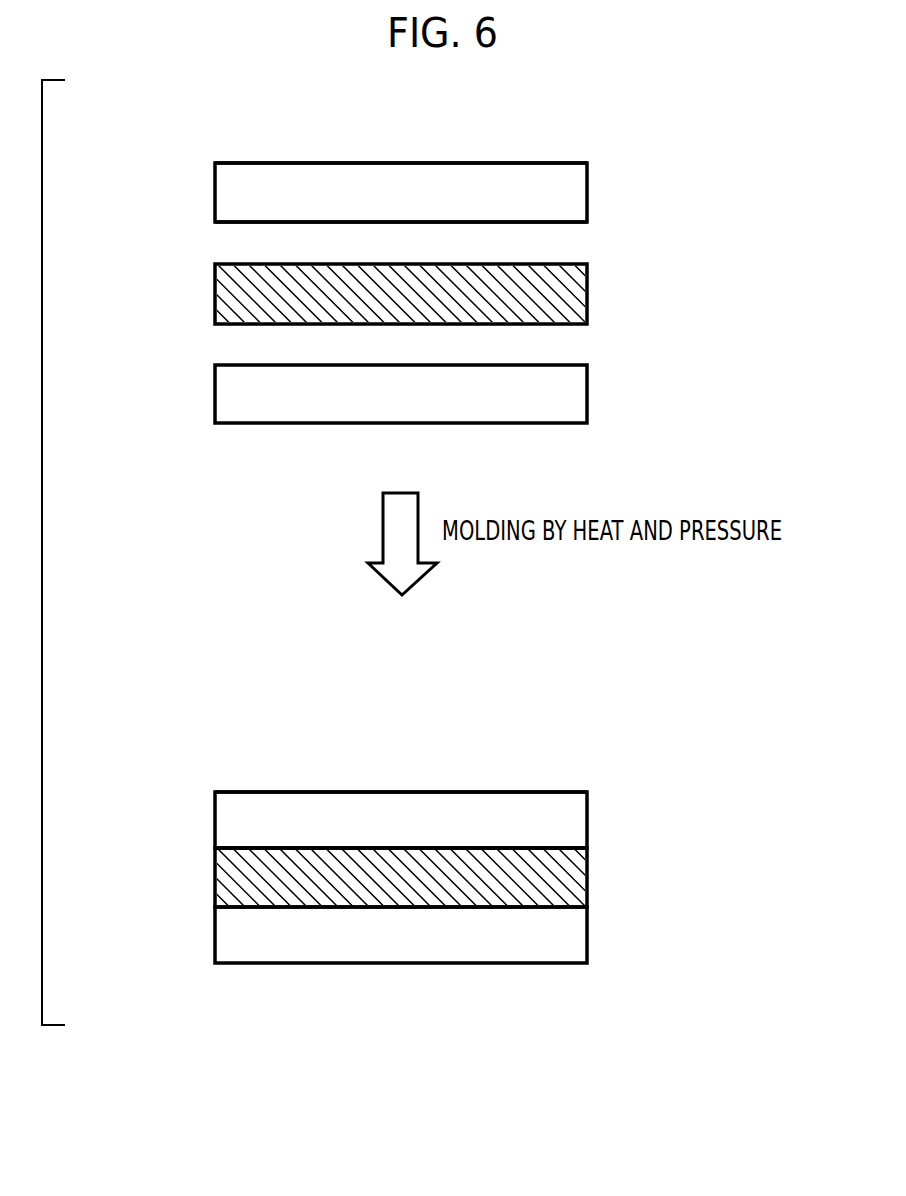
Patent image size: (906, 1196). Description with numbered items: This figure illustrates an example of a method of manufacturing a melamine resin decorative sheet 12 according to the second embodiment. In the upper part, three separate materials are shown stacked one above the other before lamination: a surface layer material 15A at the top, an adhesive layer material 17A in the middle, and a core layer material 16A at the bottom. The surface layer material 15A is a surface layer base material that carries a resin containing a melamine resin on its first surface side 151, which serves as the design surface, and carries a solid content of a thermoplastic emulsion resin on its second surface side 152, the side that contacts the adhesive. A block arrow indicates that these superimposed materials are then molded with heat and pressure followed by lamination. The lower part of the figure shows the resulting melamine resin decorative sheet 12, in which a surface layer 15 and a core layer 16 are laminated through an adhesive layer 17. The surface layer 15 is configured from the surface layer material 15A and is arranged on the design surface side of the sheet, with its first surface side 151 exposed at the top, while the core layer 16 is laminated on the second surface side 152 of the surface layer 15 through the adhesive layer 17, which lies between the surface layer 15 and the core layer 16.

The melamine resin decorative sheet 12 is at (447, 816).
The surface layer 15 is at (532, 823).
The surface layer material 15A is at (532, 197).
The core layer 16 is at (532, 933).
The core layer material 16A is at (532, 392).
The adhesive layer 17 is at (532, 880).
The adhesive layer material 17A is at (532, 295).
The first surface side 151 is at (245, 163).
The second surface side 152 is at (245, 222).